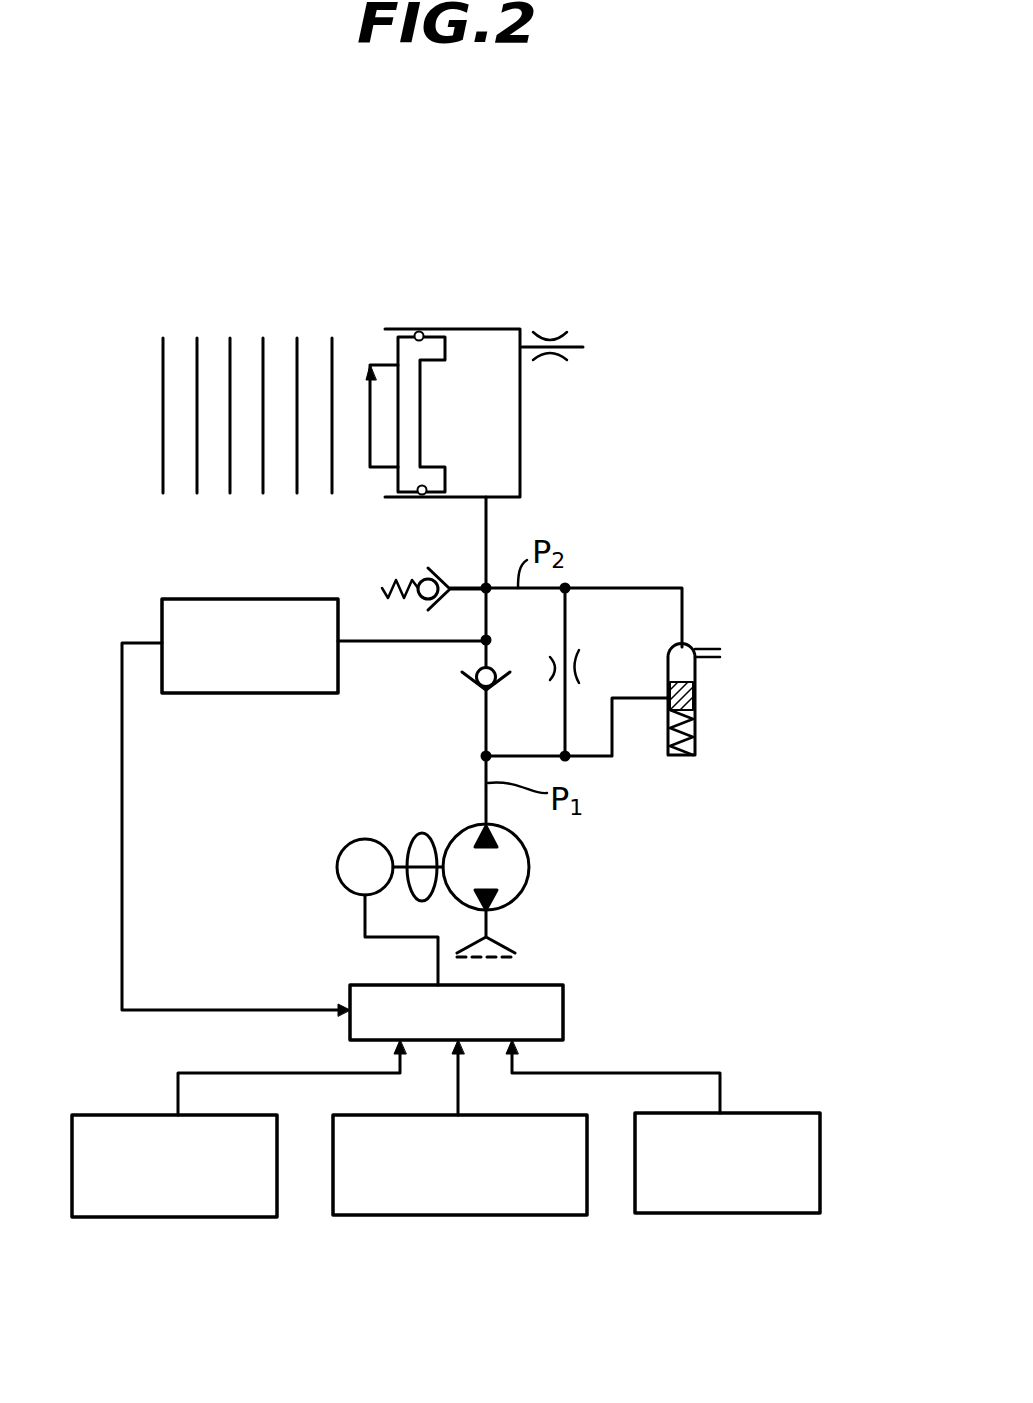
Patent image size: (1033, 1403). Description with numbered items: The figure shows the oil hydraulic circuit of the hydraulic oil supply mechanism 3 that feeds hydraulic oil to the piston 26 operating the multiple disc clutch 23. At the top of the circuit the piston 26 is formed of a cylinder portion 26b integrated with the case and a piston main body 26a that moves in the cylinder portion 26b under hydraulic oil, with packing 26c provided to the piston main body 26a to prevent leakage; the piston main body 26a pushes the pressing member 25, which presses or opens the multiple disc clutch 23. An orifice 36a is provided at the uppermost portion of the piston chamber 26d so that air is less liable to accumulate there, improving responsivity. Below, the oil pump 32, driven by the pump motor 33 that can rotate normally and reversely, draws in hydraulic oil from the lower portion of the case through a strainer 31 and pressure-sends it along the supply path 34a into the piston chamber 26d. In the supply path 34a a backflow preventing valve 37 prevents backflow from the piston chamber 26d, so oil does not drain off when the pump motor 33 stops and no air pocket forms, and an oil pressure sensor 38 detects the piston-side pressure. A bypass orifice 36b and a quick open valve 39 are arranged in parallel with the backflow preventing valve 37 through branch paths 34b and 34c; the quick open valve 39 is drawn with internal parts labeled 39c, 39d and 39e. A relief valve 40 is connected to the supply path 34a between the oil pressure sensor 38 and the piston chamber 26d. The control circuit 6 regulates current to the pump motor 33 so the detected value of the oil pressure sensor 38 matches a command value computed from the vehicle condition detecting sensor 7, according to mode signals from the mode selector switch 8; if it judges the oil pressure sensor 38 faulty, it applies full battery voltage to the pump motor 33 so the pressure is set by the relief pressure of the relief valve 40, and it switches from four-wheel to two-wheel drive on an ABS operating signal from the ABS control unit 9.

The hydraulic oil supply mechanism 3 is at (730, 514).
The control circuit 6 is at (565, 1007).
The vehicle condition detecting sensor 7 is at (458, 1215).
The mode selector switch 8 is at (178, 1217).
The ABS control unit 9 is at (720, 1213).
The multiple disc clutch 23 is at (228, 373).
The pressing member 25 is at (372, 364).
The piston 26 is at (488, 332).
The piston main body 26a is at (452, 336).
The cylinder portion 26b is at (515, 330).
The packing 26c is at (415, 331).
The piston chamber 26d is at (500, 438).
The strainer 31 is at (502, 942).
The oil pump 32 is at (530, 855).
The pump motor 33 is at (345, 843).
The supply path 34a is at (489, 513).
The branch path 34b is at (647, 588).
The branch path 34c is at (568, 717).
The orifice 36a is at (553, 330).
The bypass orifice 36b is at (552, 682).
The backflow preventing valve 37 is at (472, 690).
The oil pressure sensor 38 is at (213, 598).
The quick open valve 39 is at (753, 662).
The piston 39c is at (683, 640).
The oil chamber 39d is at (668, 697).
The port 39e is at (707, 652).
The relief valve 40 is at (380, 582).